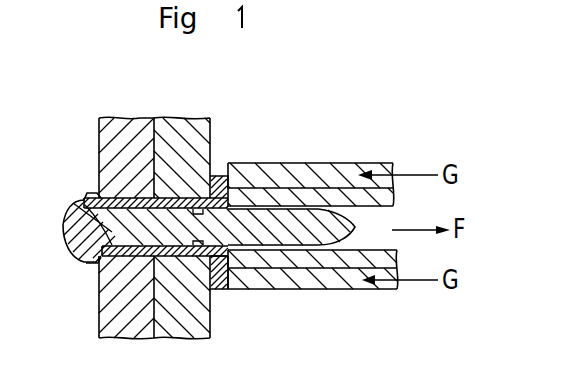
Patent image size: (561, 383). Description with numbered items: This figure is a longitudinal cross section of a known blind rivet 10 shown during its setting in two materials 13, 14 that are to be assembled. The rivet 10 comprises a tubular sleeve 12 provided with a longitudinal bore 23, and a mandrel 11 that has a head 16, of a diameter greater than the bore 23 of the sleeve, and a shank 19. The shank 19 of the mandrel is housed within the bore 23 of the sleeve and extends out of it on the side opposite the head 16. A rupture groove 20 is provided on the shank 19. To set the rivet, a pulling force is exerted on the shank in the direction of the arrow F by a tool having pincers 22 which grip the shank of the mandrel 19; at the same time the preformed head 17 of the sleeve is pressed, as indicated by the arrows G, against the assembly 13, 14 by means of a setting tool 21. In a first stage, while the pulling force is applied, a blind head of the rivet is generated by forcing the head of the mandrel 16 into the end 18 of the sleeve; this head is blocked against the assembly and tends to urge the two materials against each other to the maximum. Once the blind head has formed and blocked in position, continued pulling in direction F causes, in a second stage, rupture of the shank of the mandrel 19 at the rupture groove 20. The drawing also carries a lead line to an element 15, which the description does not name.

The blind rivet 10 is at (221, 302).
The mandrel 11 is at (50, 218).
The tubular sleeve 12 is at (92, 182).
The material 13 is at (120, 122).
The material 14 is at (181, 120).
The sleeve flange 15 is at (178, 200).
The head of the mandrel 16 is at (68, 240).
The preformed head of the sleeve 17 is at (215, 196).
The end of the sleeve 18 is at (93, 264).
The shank 19 is at (356, 222).
The rupture groove 20 is at (205, 243).
The setting tool 21 is at (300, 177).
The pincers 22 is at (377, 244).
The longitudinal bore 23 is at (90, 195).